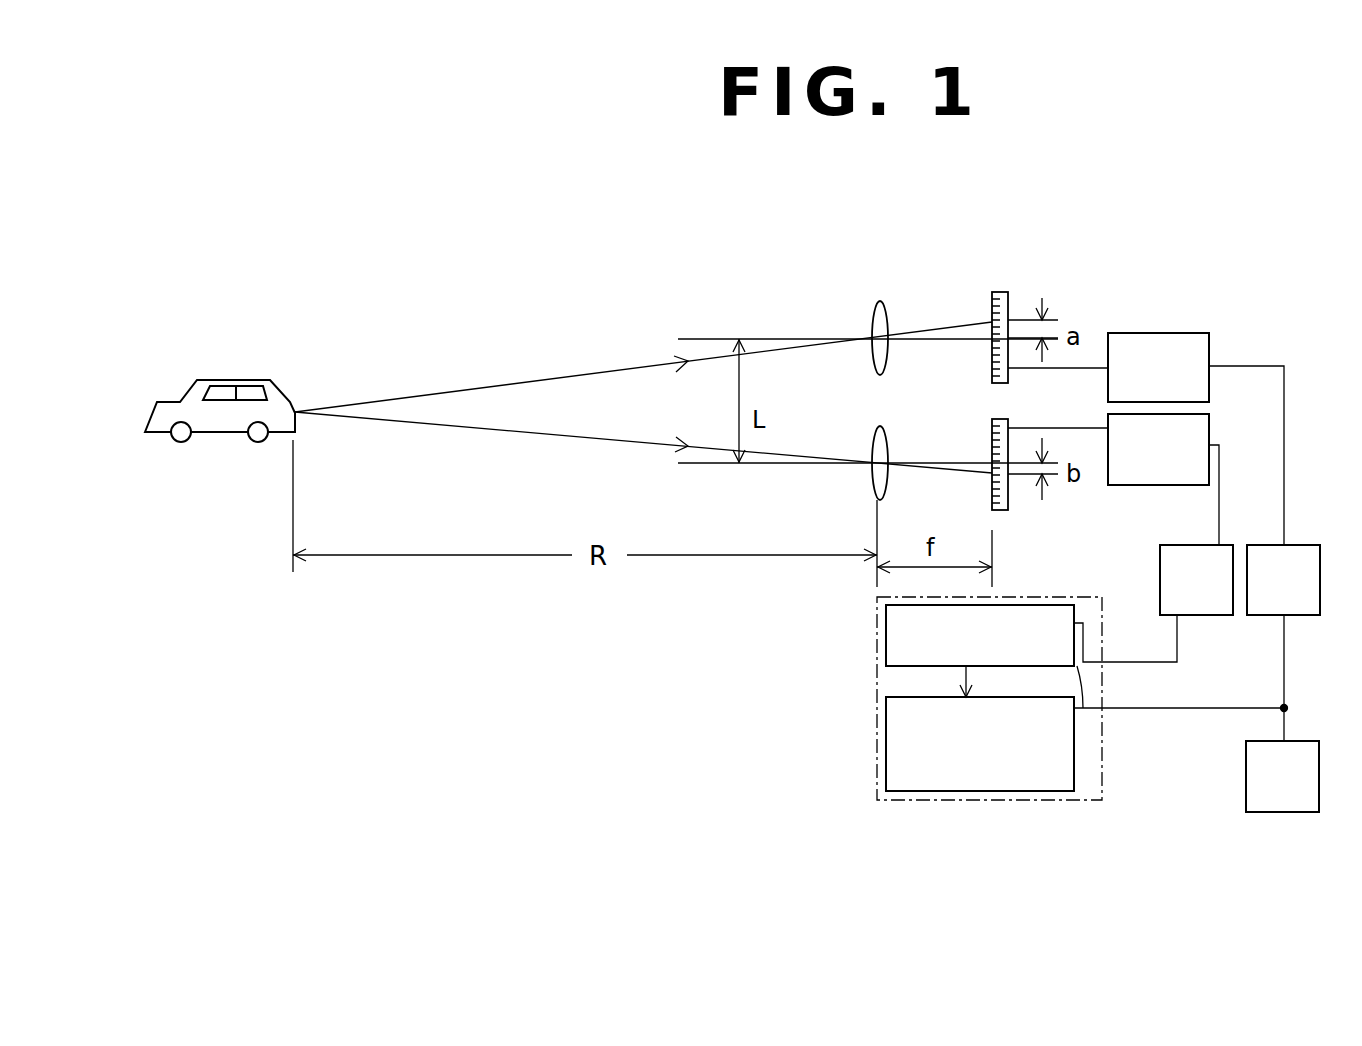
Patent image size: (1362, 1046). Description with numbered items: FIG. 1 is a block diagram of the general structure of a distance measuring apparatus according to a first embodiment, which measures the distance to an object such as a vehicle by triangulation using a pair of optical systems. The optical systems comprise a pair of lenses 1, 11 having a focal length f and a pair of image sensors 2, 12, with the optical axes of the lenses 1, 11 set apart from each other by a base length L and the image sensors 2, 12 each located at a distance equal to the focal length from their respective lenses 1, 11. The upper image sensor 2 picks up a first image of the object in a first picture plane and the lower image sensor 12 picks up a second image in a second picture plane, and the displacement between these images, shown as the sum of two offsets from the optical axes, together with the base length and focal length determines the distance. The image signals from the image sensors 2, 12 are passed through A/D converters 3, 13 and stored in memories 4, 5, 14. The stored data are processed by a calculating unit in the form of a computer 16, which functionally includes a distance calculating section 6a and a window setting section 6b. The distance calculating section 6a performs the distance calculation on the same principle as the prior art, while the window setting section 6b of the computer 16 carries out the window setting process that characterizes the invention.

The lens 1 is at (872, 308).
The image sensor 2 is at (1003, 292).
The A/D converter 3 is at (1188, 333).
The memory 4 is at (1295, 545).
The memory 5 is at (1278, 814).
The distance calculating section 6a is at (886, 722).
The window setting section 6b is at (878, 635).
The lens 11 is at (872, 488).
The image sensor 12 is at (1008, 506).
The A/D converter 13 is at (1209, 424).
The memory 14 is at (1226, 545).
The computer 16 is at (1073, 801).